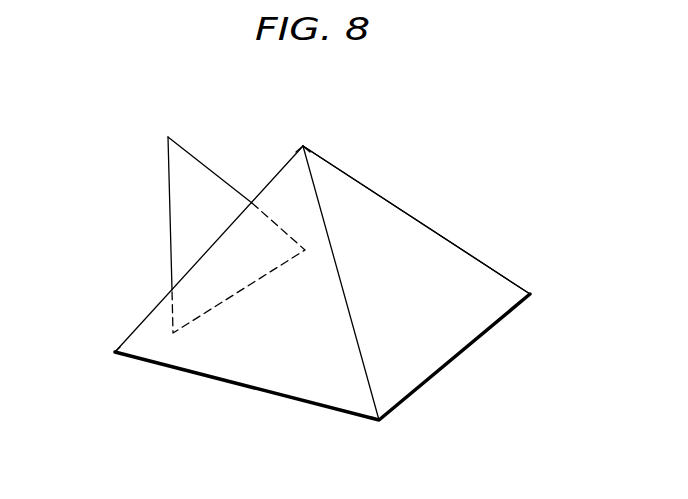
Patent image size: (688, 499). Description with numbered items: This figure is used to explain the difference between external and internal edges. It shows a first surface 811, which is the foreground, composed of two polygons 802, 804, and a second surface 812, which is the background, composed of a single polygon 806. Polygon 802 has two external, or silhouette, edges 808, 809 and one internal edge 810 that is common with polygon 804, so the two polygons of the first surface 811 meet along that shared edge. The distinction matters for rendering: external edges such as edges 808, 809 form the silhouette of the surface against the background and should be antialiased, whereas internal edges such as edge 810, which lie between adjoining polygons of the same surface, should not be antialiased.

The polygon 802 is at (323, 380).
The polygon 804 is at (405, 232).
The polygon 806 is at (193, 182).
The external edge 808 is at (280, 172).
The external edge 809 is at (140, 360).
The internal edge 810 is at (373, 395).
The first surface 811 is at (205, 402).
The second surface 812 is at (143, 196).